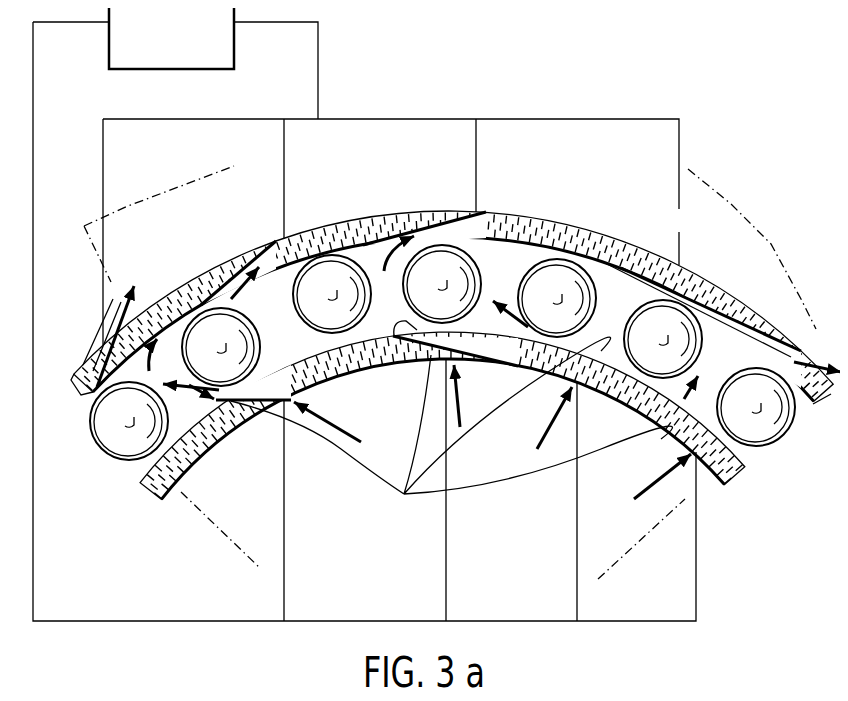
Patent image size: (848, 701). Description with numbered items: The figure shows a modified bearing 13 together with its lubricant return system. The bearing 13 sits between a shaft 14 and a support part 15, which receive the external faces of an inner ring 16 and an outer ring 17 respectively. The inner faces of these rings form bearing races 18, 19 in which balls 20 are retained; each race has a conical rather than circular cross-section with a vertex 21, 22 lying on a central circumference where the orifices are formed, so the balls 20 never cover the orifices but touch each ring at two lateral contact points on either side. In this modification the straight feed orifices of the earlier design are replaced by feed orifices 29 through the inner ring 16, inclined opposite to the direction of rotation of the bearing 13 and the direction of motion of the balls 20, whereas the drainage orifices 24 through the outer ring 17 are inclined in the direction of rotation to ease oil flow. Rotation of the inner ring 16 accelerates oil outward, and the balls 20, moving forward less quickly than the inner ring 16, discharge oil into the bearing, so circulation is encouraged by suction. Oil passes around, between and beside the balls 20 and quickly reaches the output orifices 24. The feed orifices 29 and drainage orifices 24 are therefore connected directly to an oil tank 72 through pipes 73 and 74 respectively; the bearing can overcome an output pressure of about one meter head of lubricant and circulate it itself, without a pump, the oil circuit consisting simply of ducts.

The bearing 13 is at (796, 330).
The shaft 14 is at (262, 568).
The support part 15 is at (140, 197).
The inner ring 16 is at (733, 487).
The outer ring 17 is at (817, 400).
The bearing race 18 is at (208, 420).
The bearing race 19 is at (100, 368).
The balls 20 is at (418, 290).
The vertex 21 is at (408, 345).
The vertex 22 is at (282, 242).
The output orifices 24 is at (470, 213).
The feed orifices 29 is at (494, 380).
The oil tank 72 is at (192, 42).
The pipe 73 is at (697, 600).
The pipe 74 is at (575, 120).